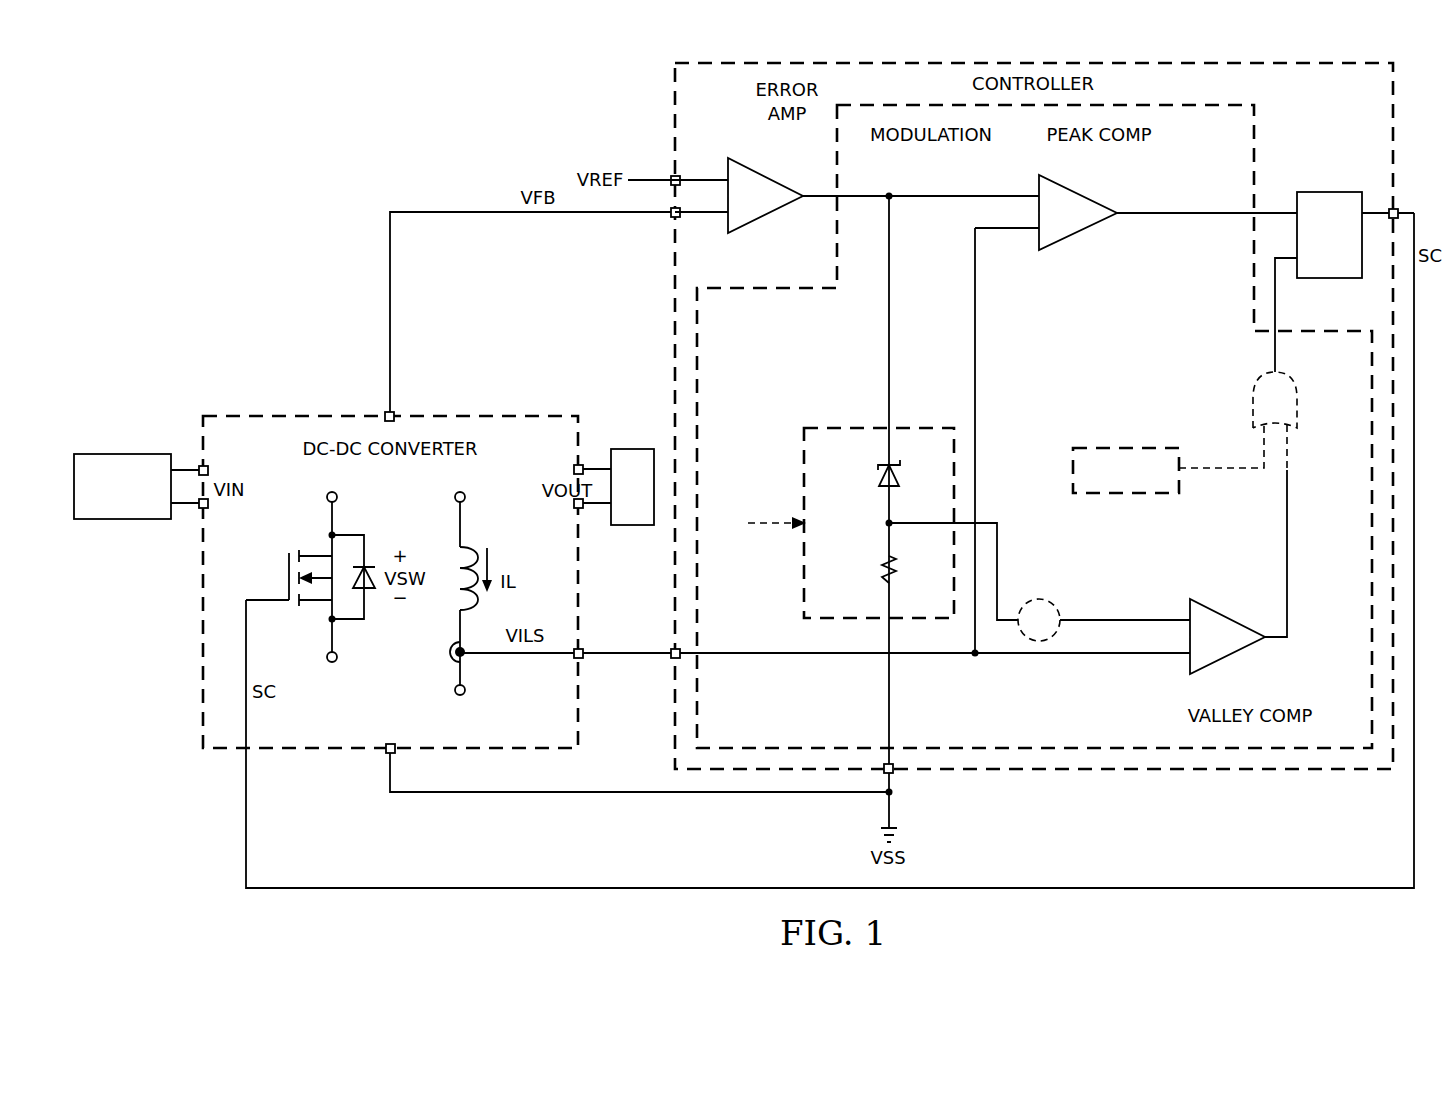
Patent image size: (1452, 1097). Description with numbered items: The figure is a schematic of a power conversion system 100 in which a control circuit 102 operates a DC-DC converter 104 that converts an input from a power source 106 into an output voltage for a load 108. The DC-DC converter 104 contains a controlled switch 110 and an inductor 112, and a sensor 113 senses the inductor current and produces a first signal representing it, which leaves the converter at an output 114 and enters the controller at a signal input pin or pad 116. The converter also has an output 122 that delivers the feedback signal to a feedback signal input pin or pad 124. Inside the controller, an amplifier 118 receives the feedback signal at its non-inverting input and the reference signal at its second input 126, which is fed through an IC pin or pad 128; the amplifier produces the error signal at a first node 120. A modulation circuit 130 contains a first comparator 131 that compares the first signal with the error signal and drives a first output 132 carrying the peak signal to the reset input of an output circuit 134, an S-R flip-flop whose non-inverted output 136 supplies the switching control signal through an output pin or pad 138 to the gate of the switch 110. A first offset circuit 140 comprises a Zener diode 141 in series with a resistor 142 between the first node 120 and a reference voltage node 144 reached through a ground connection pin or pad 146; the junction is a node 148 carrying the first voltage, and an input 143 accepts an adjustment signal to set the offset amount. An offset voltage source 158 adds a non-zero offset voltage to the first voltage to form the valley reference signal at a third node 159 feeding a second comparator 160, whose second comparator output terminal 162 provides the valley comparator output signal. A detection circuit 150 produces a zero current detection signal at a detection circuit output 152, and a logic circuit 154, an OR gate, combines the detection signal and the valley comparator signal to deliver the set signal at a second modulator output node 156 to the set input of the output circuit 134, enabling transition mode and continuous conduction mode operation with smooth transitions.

The power conversion system 100 is at (212, 158).
The control circuit 102 is at (666, 93).
The DC-DC converter 104 is at (300, 411).
The power source 106 is at (124, 452).
The load 108 is at (627, 449).
The controlled switch 110 is at (286, 568).
The inductor 112 is at (479, 562).
The sensor 113 is at (440, 662).
The output 114 is at (625, 652).
The signal input pin or pad 116 is at (673, 661).
The amplifier 118 is at (765, 176).
The first node 120 is at (940, 200).
The output 122 is at (665, 218).
The feedback signal input pin or pad 124 is at (683, 218).
The second input 126 is at (665, 178).
The IC pin or pad 128 is at (683, 178).
The modulation circuit 130 is at (1265, 117).
The first comparator 131 is at (1076, 196).
The first output 132 is at (1185, 218).
The output circuit 134 is at (1325, 192).
The non-inverted output 136 is at (1158, 890).
The output pin or pad 138 is at (1400, 208).
The first offset circuit 140 is at (834, 421).
The Zener diode 141 is at (880, 478).
The resistor 142 is at (880, 573).
The input 143 is at (764, 531).
The reference voltage node 144 is at (884, 815).
The ground connection pin or pad 146 is at (893, 776).
The node 148 is at (905, 531).
The detection circuit 150 is at (1126, 447).
The detection circuit output 152 is at (1222, 471).
The logic circuit 154 is at (1256, 392).
The second modulator output node 156 is at (1278, 356).
The offset voltage source 158 is at (1045, 598).
The third node 159 is at (1158, 618).
The second comparator 160 is at (1230, 656).
The second comparator output terminal 162 is at (1290, 610).